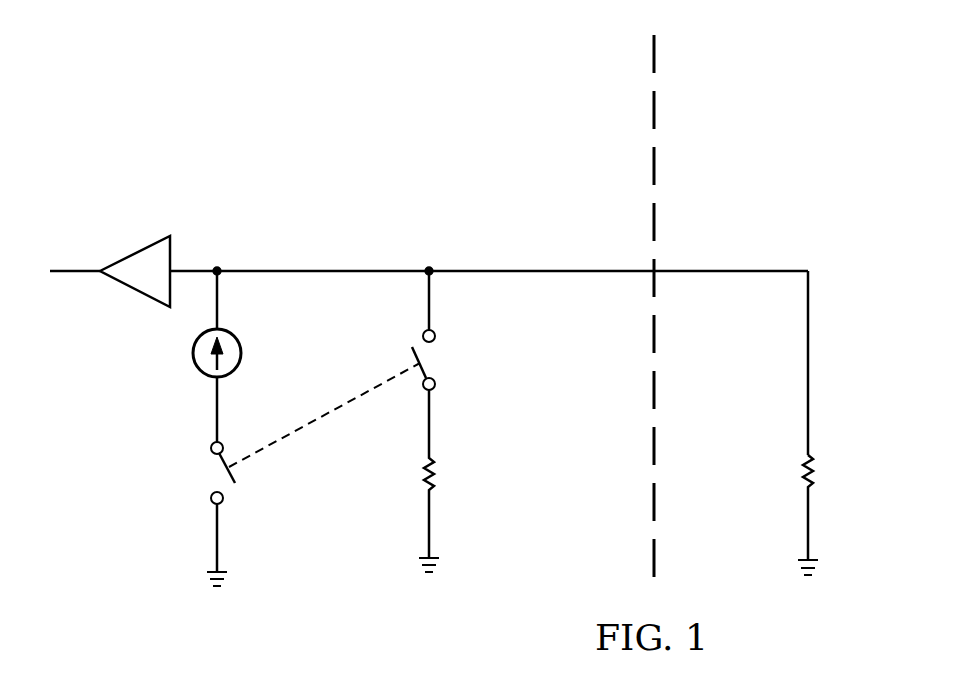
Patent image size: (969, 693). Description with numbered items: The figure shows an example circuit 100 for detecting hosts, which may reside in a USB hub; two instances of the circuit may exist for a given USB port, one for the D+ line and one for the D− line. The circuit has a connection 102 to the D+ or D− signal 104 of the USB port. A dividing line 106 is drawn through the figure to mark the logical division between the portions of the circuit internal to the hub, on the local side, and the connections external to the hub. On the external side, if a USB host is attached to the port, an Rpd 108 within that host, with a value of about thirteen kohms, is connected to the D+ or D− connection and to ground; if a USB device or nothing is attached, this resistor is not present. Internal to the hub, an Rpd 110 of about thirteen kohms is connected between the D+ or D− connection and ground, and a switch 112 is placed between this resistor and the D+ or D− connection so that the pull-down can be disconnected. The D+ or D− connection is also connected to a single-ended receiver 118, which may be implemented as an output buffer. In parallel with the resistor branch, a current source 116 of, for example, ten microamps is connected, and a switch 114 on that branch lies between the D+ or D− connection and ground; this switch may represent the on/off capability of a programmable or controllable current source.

The circuit 100 is at (316, 64).
The connection 102 is at (659, 278).
The D+ or D− signal 104 is at (773, 258).
The dividing line 106 is at (659, 57).
The Rpd 108 is at (800, 471).
The Rpd 110 is at (421, 470).
The switch 112 is at (414, 354).
The switch 114 is at (233, 476).
The current source 116 is at (198, 372).
The single-ended receiver 118 is at (134, 249).